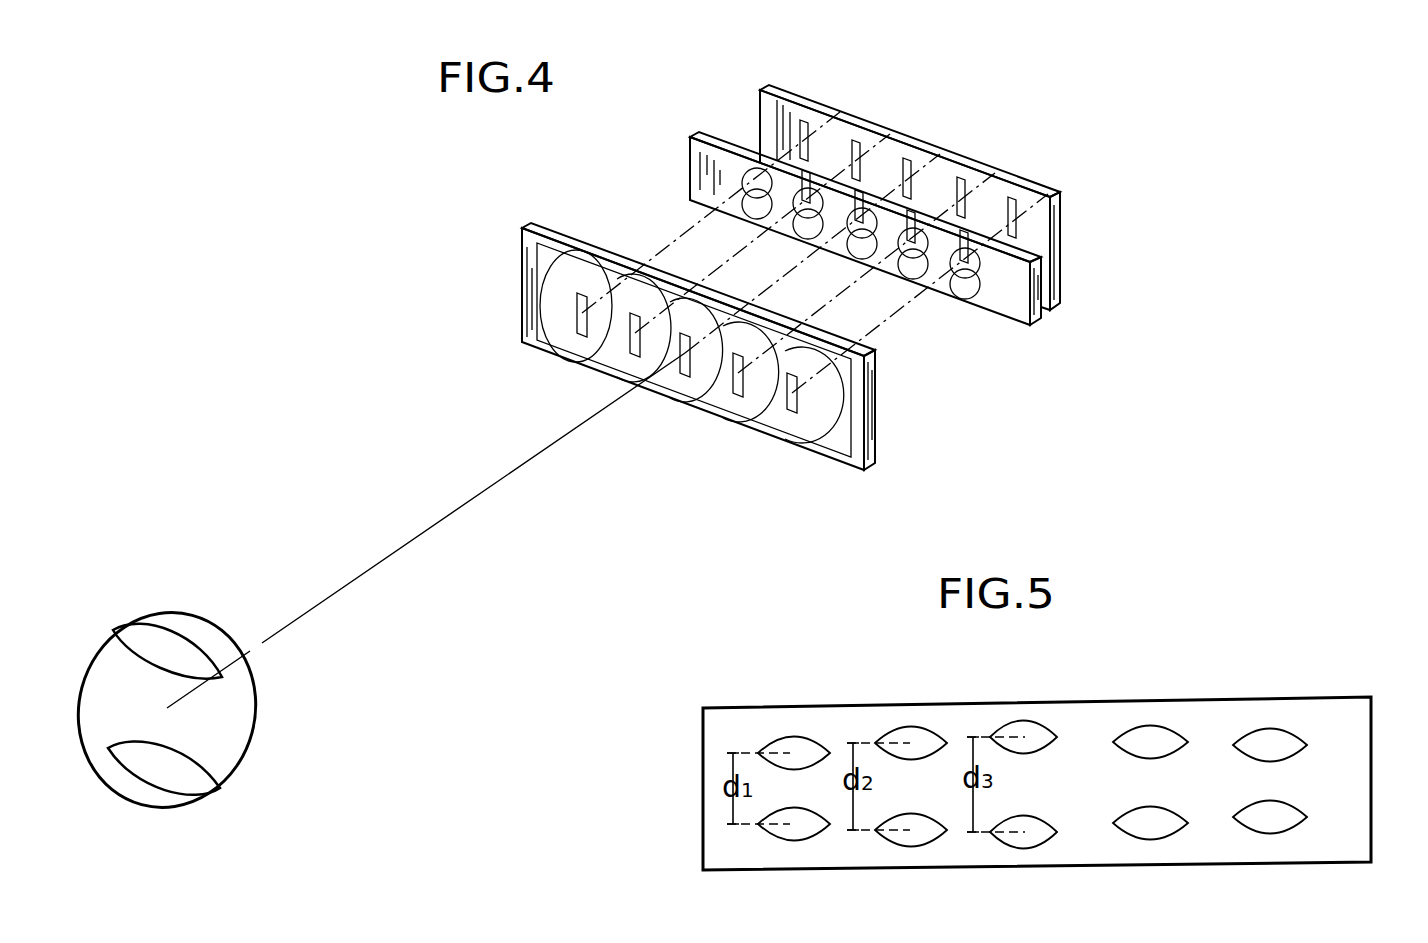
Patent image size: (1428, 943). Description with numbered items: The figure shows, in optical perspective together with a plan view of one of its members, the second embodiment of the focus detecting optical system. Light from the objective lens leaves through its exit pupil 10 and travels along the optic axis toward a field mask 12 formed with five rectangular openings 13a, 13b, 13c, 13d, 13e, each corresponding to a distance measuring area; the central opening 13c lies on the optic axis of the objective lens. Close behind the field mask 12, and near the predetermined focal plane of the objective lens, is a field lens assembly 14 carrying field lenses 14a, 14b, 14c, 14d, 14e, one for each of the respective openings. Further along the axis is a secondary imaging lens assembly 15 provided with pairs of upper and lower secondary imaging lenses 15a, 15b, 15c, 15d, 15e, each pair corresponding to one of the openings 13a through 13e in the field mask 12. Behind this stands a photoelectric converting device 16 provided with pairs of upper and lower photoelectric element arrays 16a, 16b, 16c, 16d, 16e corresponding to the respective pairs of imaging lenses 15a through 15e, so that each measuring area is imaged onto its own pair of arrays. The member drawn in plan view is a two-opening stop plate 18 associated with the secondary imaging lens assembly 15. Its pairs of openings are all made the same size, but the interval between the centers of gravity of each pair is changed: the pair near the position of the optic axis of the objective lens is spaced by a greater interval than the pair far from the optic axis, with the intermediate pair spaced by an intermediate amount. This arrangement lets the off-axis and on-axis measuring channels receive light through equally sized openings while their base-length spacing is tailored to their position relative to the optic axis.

In FIG. 4, the exit pupil 10 is at (252, 712).
In FIG. 4, the field mask 12 is at (820, 458).
In FIG. 4, the rectangular opening 13a is at (561, 301).
In FIG. 4, the rectangular opening 13b is at (625, 344).
In FIG. 4, the rectangular opening 13c is at (686, 351).
In FIG. 4, the rectangular opening 13d is at (768, 385).
In FIG. 4, the rectangular opening 13e is at (849, 424).
In FIG. 4, the field lens assembly 14 is at (720, 358).
In FIG. 4, the field lens 14a is at (584, 258).
In FIG. 4, the field lens 14b is at (650, 275).
In FIG. 4, the field lens 14c is at (705, 292).
In FIG. 4, the field lens 14d is at (760, 318).
In FIG. 4, the field lens 14e is at (833, 338).
In FIG. 4, the secondary imaging lens assembly 15 is at (866, 266).
In FIG. 4, the secondary imaging lens pair 15a is at (742, 205).
In FIG. 4, the secondary imaging lens pair 15b is at (808, 235).
In FIG. 4, the secondary imaging lens pair 15c is at (866, 258).
In FIG. 4, the secondary imaging lens pair 15d is at (920, 278).
In FIG. 4, the secondary imaging lens pair 15e is at (972, 300).
In FIG. 4, the photoelectric converting device 16 is at (942, 181).
In FIG. 4, the photoelectric element array pair 16a is at (802, 118).
In FIG. 4, the photoelectric element array pair 16b is at (858, 138).
In FIG. 4, the photoelectric element array pair 16c is at (910, 157).
In FIG. 4, the photoelectric element array pair 16d is at (964, 176).
In FIG. 4, the photoelectric element array pair 16e is at (1015, 196).
In FIG. 4, the two-opening stop plate 18 is at (1012, 322).
In FIG. 5, the two-opening stop plate 18 is at (782, 812).